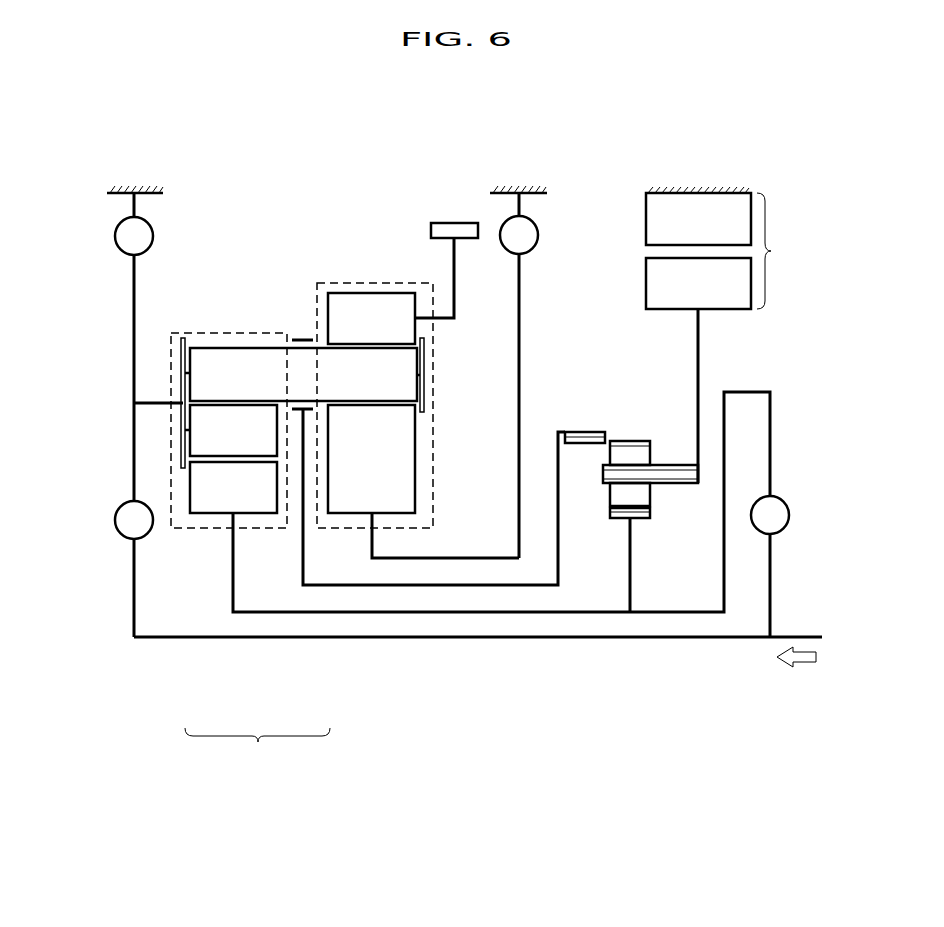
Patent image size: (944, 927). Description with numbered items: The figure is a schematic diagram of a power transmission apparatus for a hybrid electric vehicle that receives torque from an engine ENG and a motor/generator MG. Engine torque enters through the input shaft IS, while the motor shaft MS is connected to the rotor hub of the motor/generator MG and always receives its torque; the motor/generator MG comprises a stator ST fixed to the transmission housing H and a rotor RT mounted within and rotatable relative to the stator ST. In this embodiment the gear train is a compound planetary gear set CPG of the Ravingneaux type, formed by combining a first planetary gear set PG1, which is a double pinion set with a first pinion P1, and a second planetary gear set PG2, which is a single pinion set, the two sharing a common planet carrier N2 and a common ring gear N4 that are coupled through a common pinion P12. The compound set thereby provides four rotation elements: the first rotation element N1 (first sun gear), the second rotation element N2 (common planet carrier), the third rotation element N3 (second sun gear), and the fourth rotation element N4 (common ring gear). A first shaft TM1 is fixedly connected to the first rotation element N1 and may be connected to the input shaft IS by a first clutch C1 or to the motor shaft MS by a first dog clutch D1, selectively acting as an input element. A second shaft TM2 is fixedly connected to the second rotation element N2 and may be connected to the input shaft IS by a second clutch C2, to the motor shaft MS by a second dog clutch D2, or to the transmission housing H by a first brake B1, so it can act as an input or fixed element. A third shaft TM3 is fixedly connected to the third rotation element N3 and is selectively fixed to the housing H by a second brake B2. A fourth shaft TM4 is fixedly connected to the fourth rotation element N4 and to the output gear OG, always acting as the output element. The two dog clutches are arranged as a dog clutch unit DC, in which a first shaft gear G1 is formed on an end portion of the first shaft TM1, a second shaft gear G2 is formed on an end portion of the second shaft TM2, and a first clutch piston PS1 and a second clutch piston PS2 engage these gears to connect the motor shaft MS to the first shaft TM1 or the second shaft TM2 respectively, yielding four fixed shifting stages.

The transmission housing H is at (694, 189).
The first brake B1 is at (134, 236).
The second brake B2 is at (519, 235).
The first clutch C1 is at (770, 515).
The second clutch C2 is at (134, 520).
The first shaft TM1 is at (580, 612).
The second shaft TM2 is at (136, 274).
The third shaft TM3 is at (441, 558).
The fourth shaft TM4 is at (454, 256).
The input shaft IS is at (673, 638).
The engine ENG is at (796, 672).
The output gear OG is at (454, 221).
The first planetary gear set PG1 is at (202, 535).
The second planetary gear set PG2 is at (348, 535).
The compound planetary gear set CPG is at (257, 749).
The first rotation element N1 is at (233, 487).
The second rotation element N2 is at (181, 365).
The third rotation element N3 is at (371, 459).
The fourth rotation element N4 is at (371, 318).
The first pinion P1 is at (233, 430).
The common pinion P12 is at (307, 375).
The motor/generator MG is at (778, 251).
The stator ST is at (698, 219).
The rotor RT is at (698, 283).
The motor shaft MS is at (698, 340).
The dog clutch unit DC is at (662, 442).
The first shaft gear G1 is at (618, 515).
The second shaft gear G2 is at (569, 430).
The first clutch piston PS1 is at (647, 496).
The second clutch piston PS2 is at (630, 450).
The first dog clutch D1 is at (656, 527).
The second dog clutch D2 is at (590, 427).